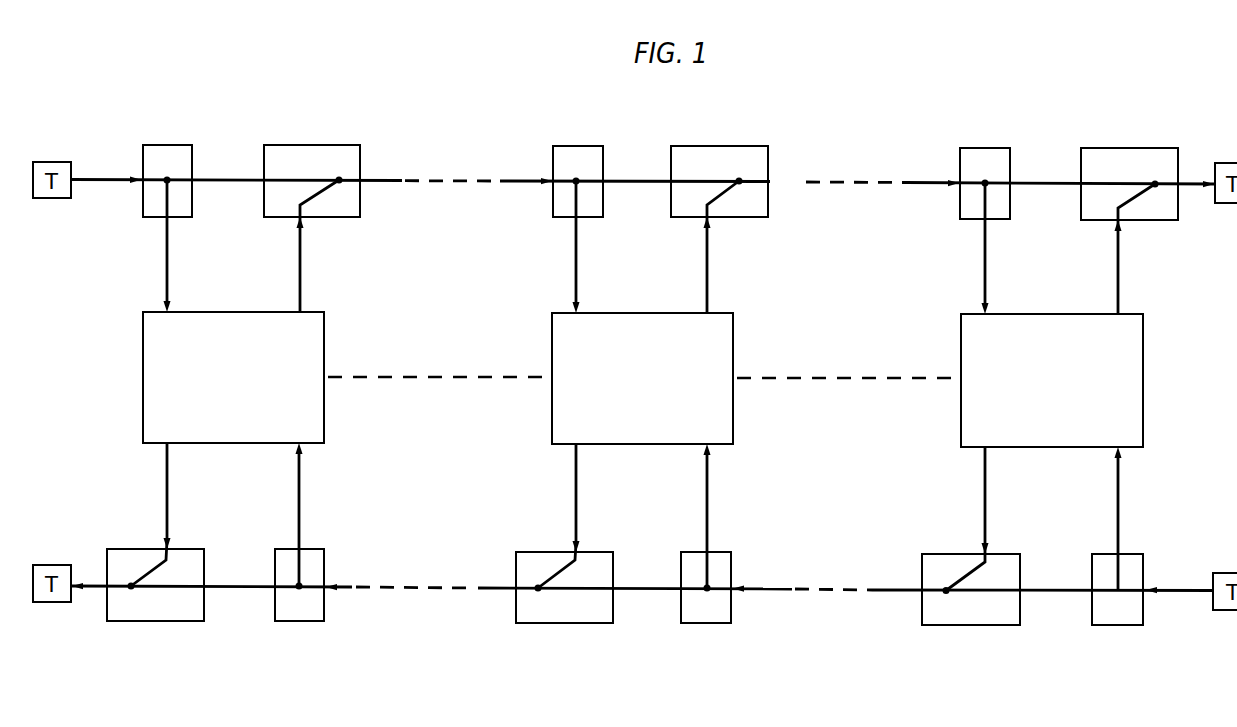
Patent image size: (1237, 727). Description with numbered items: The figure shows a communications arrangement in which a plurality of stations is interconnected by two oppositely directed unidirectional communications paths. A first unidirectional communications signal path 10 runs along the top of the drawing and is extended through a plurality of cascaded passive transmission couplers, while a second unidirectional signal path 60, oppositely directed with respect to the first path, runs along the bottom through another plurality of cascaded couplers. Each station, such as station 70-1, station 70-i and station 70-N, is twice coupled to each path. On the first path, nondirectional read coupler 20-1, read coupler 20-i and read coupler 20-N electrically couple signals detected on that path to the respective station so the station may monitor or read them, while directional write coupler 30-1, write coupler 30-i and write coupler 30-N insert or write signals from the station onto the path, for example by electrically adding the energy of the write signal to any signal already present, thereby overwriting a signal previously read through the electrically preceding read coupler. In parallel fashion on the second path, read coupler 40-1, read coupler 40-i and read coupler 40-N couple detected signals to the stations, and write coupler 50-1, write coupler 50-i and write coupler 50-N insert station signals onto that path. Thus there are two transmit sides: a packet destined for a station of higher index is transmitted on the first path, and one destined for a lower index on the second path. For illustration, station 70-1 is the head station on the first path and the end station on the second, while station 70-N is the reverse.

The first unidirectional communications signal path 10 is at (90, 182).
The second unidirectional signal path 60 is at (90, 588).
The passive read coupler 20-1 is at (183, 145).
The passive write coupler 30-1 is at (306, 145).
The station 70-1 is at (197, 314).
The passive write coupler 50-1 is at (181, 622).
The passive read coupler 40-1 is at (313, 622).
The passive read coupler 20-i is at (569, 146).
The passive write coupler 30-i is at (705, 146).
The station 70-i is at (609, 316).
The passive write coupler 50-i is at (573, 623).
The passive read coupler 40-i is at (728, 623).
The passive read coupler 20-N is at (972, 148).
The passive write coupler 30-N is at (1108, 148).
The station 70-N is at (1024, 318).
The passive write coupler 50-N is at (985, 625).
The passive read coupler 40-N is at (1122, 625).